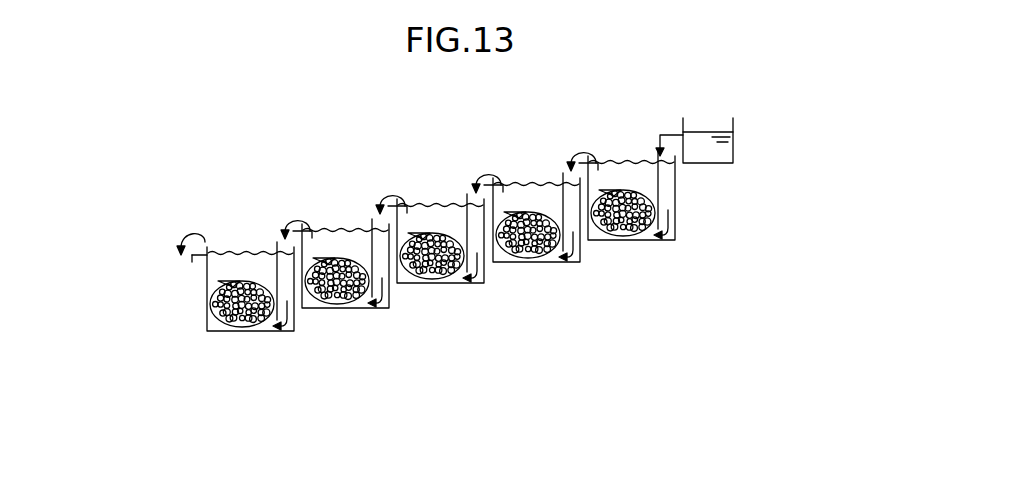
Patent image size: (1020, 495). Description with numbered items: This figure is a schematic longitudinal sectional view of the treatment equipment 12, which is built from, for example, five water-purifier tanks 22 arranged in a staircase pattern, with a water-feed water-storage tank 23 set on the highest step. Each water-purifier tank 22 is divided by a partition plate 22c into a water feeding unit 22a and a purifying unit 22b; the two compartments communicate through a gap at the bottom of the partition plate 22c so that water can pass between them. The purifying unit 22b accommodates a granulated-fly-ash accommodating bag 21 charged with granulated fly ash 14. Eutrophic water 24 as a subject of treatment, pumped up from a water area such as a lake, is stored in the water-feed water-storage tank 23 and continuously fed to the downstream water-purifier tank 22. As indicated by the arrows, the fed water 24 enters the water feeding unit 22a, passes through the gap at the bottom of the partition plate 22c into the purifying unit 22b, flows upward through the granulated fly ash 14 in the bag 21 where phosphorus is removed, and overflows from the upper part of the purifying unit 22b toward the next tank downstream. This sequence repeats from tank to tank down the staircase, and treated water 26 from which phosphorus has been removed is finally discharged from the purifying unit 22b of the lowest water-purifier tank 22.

The treatment equipment 12 is at (506, 142).
The granulated fly ash 14 is at (427, 260).
The granulated-fly-ash accommodating bag 21 is at (402, 285).
The water-purifier tank 22 is at (260, 331).
The water feeding unit 22a is at (283, 278).
The purifying unit 22b is at (217, 268).
The partition plate 22c is at (275, 262).
The water-feed water-storage tank 23 is at (733, 140).
The water as a subject of treatment 24 is at (705, 143).
The treated water 26 is at (203, 240).